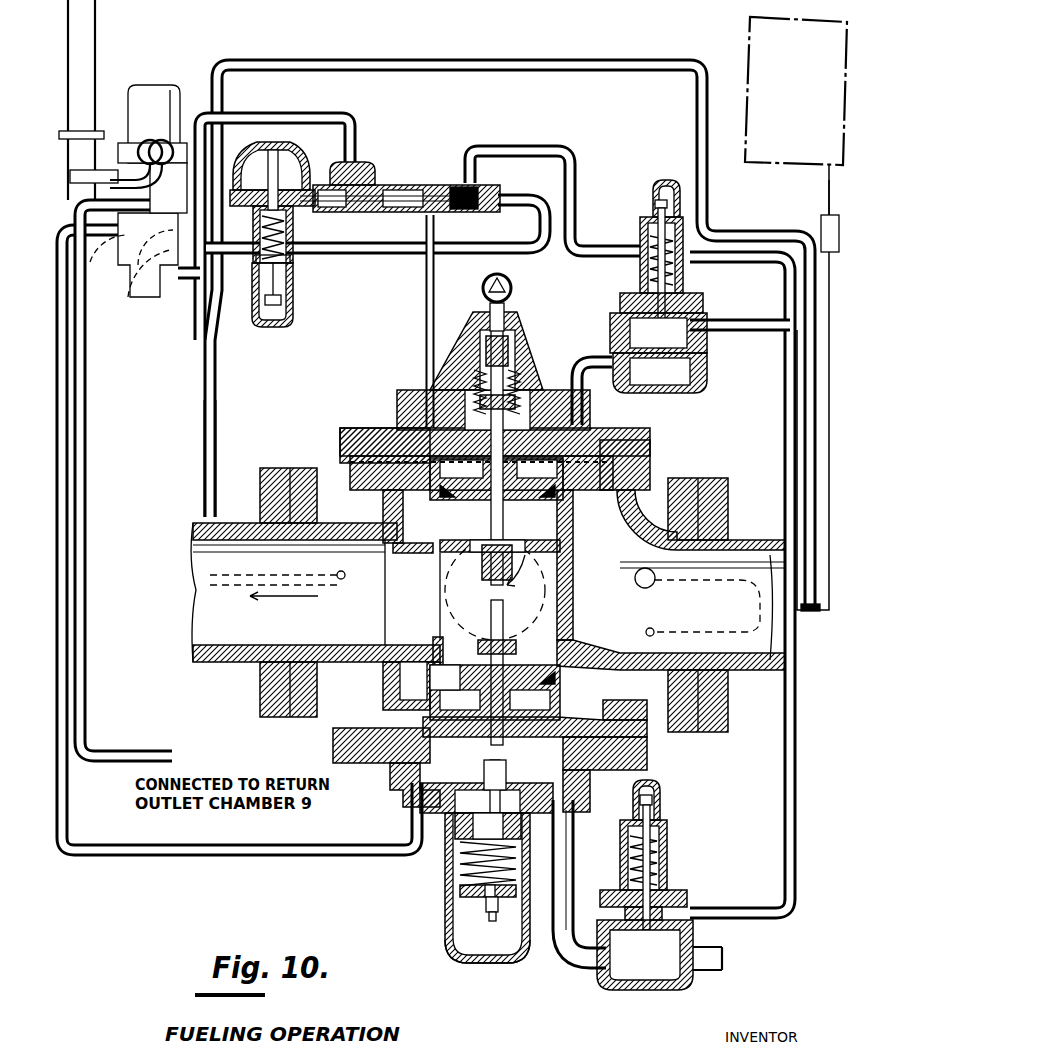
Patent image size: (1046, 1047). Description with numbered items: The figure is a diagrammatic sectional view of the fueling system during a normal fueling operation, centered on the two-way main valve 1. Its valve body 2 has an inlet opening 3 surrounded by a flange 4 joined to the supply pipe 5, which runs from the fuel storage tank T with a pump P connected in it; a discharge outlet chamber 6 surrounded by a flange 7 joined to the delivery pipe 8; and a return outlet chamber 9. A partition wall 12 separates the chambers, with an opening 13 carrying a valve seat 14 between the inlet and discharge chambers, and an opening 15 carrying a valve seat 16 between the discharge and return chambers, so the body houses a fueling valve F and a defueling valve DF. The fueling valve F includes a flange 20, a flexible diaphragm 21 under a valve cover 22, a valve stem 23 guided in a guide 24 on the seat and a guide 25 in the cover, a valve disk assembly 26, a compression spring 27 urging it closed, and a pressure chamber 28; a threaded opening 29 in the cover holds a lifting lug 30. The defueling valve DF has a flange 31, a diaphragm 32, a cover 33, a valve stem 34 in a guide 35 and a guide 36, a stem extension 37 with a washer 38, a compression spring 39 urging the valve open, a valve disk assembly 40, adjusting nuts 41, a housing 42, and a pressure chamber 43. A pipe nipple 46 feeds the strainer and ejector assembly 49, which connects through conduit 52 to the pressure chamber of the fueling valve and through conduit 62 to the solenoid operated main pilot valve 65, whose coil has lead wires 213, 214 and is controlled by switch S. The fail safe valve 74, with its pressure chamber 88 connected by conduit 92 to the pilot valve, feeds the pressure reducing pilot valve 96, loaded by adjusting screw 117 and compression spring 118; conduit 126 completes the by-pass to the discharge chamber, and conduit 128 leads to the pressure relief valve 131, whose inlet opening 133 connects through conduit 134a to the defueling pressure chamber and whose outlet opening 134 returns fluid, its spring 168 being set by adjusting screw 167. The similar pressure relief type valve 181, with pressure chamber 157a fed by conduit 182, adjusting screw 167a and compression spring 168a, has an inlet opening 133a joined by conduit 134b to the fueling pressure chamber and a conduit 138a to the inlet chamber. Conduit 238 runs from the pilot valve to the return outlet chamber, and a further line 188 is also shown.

The two-way main valve 1 is at (360, 668).
The valve body 2 is at (640, 520).
The inlet opening 3 is at (666, 616).
The flange 4 is at (690, 479).
The supply pipe 5 is at (829, 200).
The discharge outlet chamber 6 is at (342, 626).
The flange 7 is at (296, 468).
The delivery pipe 8 is at (223, 662).
The return outlet chamber 9 is at (566, 589).
The partition wall 12 is at (571, 603).
The opening 13 is at (400, 555).
The valve seat 14 is at (565, 534).
The opening 15 is at (430, 645).
The valve seat 16 is at (560, 676).
The flange 20 is at (360, 488).
The flexible diaphragm 21 is at (620, 448).
The valve cover 22 is at (360, 432).
The valve stem 23 is at (488, 356).
The guide 24 is at (485, 566).
The guide 25 is at (484, 379).
The valve disk assembly 26 is at (565, 497).
The compression spring 27 is at (538, 415).
The pressure chamber 28 is at (572, 438).
The threaded opening 29 is at (505, 314).
The lifting lug 30 is at (510, 285).
The flange 31 is at (625, 715).
The diaphragm 32 is at (640, 746).
The cover 33 is at (335, 746).
The valve stem 34 is at (490, 618).
The guide 35 is at (518, 646).
The guide 36 is at (478, 785).
The stem extension 37 is at (488, 916).
The washer 38 is at (504, 906).
The compression spring 39 is at (448, 873).
The valve disk assembly 40 is at (430, 690).
The nuts 41 is at (473, 900).
The housing 42 is at (454, 958).
The pressure chamber 43 is at (580, 783).
The pipe nipple 46 is at (548, 149).
The strainer and ejector assembly 49 is at (470, 204).
The conduit 52 is at (425, 322).
The conduit 62 is at (364, 256).
The solenoid operated main pilot valve 65 is at (162, 86).
The fail safe valve 74 is at (330, 180).
The pressure chamber 88 is at (350, 172).
The conduit 92 is at (320, 117).
The pressure reducing pilot valve 96 is at (297, 235).
The adjusting screw 117 is at (278, 290).
The compression spring 118 is at (255, 247).
The conduit 126 is at (218, 410).
The conduit 128 is at (448, 72).
The pressure relief valve 131 is at (668, 876).
The inlet opening 133 is at (605, 985).
The outlet opening 134 is at (680, 985).
The inlet opening 133a is at (626, 386).
The conduit 134a is at (578, 862).
The conduit 134b is at (576, 372).
The conduit 138a is at (785, 465).
The pressure chamber 157a is at (635, 313).
The adjusting screw 167 is at (660, 810).
The compression spring 168 is at (660, 850).
The adjusting screw 167a is at (660, 224).
The compression spring 168a is at (670, 279).
The pressure relief type valve 181 is at (646, 250).
The conduit 182 is at (737, 322).
The pipe 188 is at (195, 857).
The lead wire 213 is at (80, 174).
The lead wire 214 is at (135, 152).
The conduit 238 is at (74, 600).
The defueling valve DF is at (390, 771).
The fueling valve F is at (532, 332).
The pump P is at (822, 231).
The switch S is at (95, 122).
The fuel storage tank T is at (752, 40).